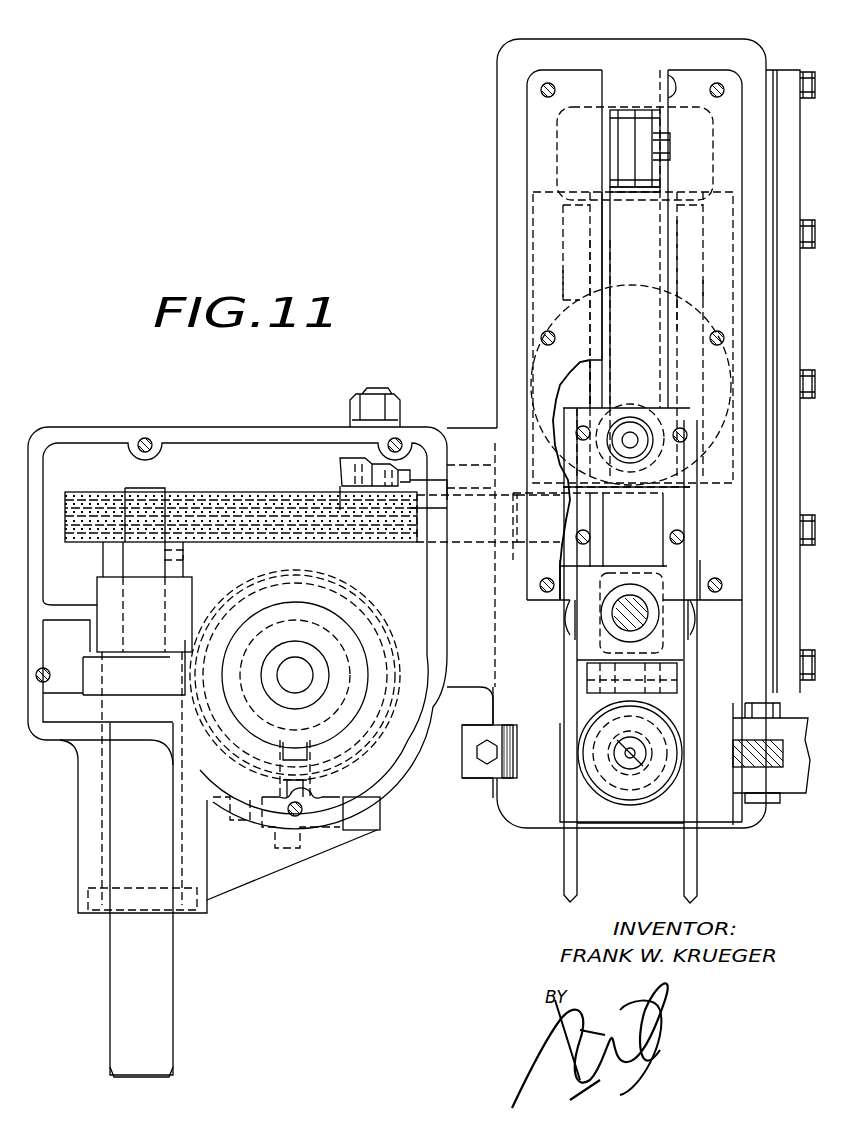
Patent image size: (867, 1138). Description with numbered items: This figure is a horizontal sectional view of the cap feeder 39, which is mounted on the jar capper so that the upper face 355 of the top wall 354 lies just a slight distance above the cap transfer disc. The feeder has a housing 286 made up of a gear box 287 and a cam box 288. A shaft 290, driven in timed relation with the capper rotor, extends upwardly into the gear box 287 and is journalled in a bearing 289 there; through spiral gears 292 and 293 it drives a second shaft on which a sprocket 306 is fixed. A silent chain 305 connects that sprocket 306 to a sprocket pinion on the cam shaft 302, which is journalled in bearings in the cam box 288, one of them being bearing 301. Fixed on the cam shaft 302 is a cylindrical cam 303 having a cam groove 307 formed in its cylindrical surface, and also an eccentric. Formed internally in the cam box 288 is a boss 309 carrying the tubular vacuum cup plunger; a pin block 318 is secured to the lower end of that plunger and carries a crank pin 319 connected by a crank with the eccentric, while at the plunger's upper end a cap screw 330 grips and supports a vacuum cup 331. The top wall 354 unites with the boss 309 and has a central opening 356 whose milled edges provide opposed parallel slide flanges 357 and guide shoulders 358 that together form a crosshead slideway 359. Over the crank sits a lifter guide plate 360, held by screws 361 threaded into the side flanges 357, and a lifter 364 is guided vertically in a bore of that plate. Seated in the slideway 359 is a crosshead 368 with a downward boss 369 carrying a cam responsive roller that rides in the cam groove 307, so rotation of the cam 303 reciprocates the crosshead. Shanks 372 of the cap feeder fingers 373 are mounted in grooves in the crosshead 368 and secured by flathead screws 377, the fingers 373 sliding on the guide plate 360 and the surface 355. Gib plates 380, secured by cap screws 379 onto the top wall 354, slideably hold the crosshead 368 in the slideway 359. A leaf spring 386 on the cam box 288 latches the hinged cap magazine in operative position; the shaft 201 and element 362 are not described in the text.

The cap feeder 39 is at (358, 197).
The output shaft 201 is at (162, 975).
The housing 286 is at (172, 424).
The gear box 287 is at (252, 426).
The cam box 288 is at (505, 192).
The bearing 289 is at (328, 660).
The shaft 290 is at (295, 675).
The spiral gear 292 is at (227, 603).
The spiral gear 293 is at (97, 695).
The bearing 301 is at (645, 180).
The cam shaft 302 is at (630, 110).
The cylindrical cam 303 is at (652, 359).
The silent chain 305 is at (233, 492).
The sprocket 306 is at (110, 560).
The cam groove 307 is at (540, 380).
The boss 309 is at (660, 680).
The pin block 318 is at (592, 795).
The crank pin 319 is at (590, 674).
The cap screw 330 is at (643, 745).
The vacuum cup 331 is at (680, 795).
The top wall 354 is at (677, 231).
The upper face 355 is at (645, 820).
The central opening 356 is at (597, 287).
The slide flanges 357 is at (685, 313).
The guide shoulders 358 is at (710, 288).
The crosshead slideway 359 is at (628, 247).
The lifter guide plate 360 is at (660, 625).
The screws 361 is at (565, 612).
The terminal block 362 is at (795, 780).
The lifter 364 is at (630, 613).
The crosshead 368 is at (650, 527).
The boss 369 is at (632, 415).
The shanks 372 is at (574, 508).
The cap feeder fingers 373 is at (570, 692).
The flathead screws 377 is at (578, 445).
The cap screws 379 is at (548, 90).
The gib plates 380 is at (610, 80).
The leaf spring 386 is at (470, 778).